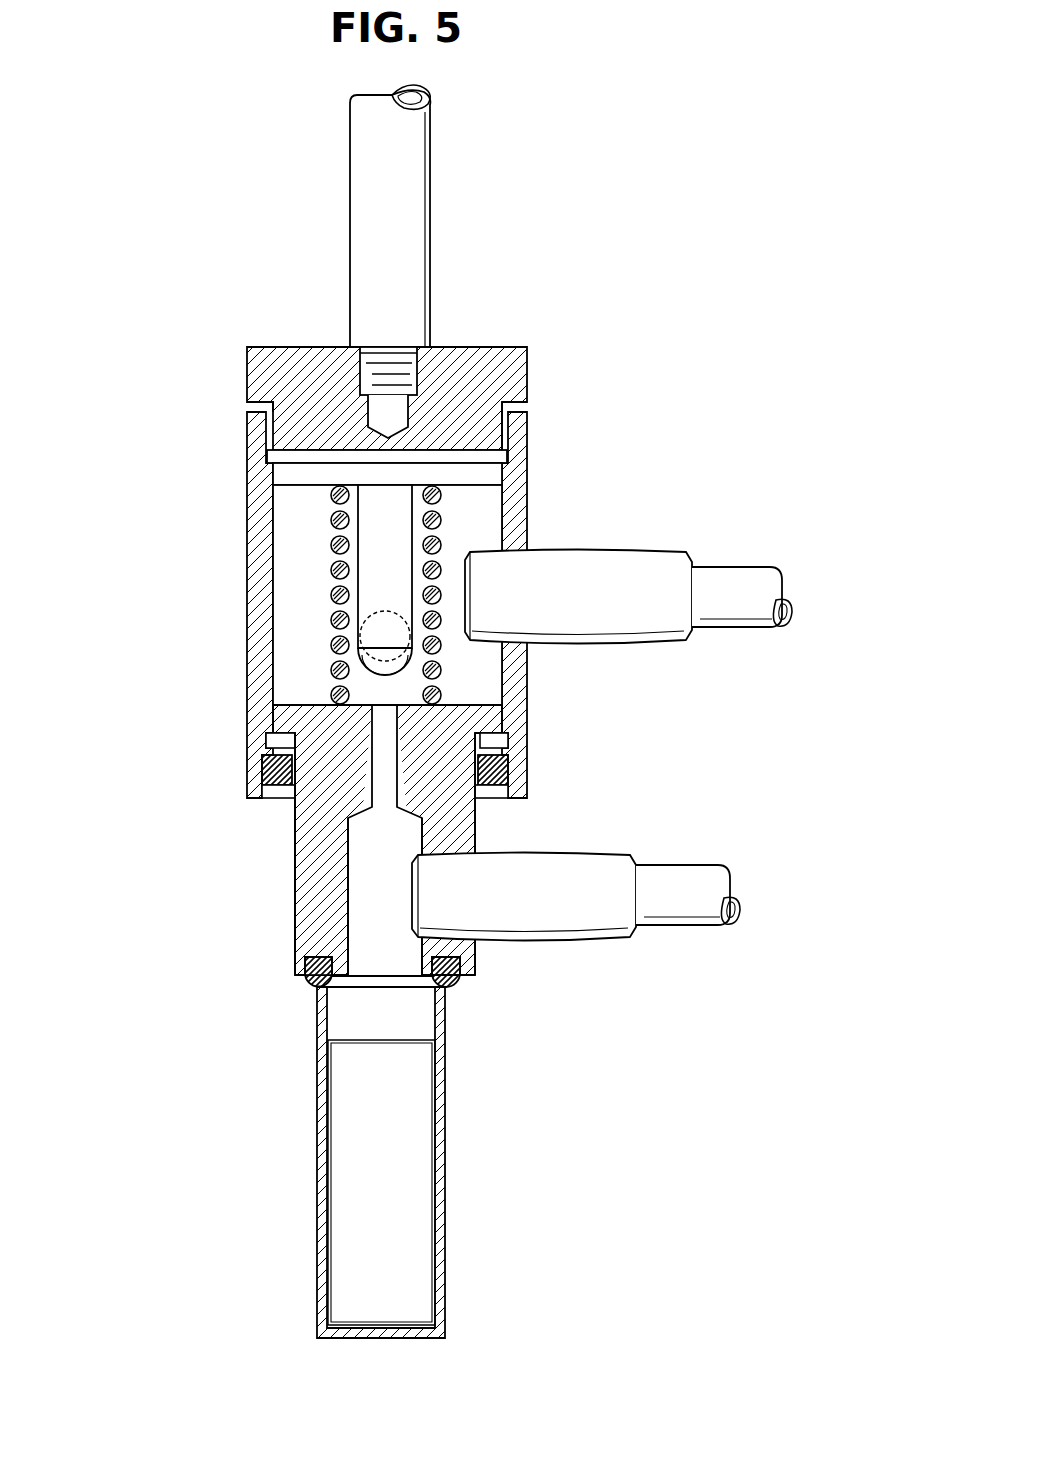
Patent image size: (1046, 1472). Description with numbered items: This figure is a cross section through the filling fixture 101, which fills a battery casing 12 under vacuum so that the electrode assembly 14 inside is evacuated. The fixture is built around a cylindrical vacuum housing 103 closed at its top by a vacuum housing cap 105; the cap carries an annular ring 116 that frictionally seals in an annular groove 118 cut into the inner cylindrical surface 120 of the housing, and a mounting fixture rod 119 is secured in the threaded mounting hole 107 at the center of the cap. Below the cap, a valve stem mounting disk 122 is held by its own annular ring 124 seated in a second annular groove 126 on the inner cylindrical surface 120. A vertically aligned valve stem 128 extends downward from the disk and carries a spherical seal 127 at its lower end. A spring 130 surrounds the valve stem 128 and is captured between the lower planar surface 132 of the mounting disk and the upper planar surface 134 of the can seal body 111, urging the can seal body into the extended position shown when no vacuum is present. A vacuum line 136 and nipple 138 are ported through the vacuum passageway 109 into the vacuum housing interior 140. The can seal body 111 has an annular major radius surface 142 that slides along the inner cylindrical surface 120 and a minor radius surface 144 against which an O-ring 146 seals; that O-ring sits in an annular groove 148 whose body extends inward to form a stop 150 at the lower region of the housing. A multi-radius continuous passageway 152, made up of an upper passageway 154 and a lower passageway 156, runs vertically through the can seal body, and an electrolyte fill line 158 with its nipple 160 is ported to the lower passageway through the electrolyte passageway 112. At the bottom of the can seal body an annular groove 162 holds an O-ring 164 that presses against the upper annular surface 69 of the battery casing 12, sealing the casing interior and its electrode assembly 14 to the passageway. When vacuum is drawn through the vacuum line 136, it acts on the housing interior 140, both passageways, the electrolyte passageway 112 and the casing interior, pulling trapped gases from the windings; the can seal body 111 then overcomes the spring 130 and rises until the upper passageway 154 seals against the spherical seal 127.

The filling fixture 101 is at (618, 316).
The mounting fixture rod 119 is at (418, 212).
The cylindrical vacuum housing 103 is at (386, 548).
The cylindrical vacuum housing cap 105 is at (250, 363).
The annular ring 116 is at (507, 440).
The threaded mounting hole 107 is at (370, 372).
The annular groove 118 is at (266, 412).
The annular ring 124 is at (528, 440).
The annular groove 126 is at (268, 460).
The valve stem mounting disk 122 is at (508, 473).
The inner cylindrical surface 120 is at (282, 514).
The vacuum passageway 109 is at (525, 537).
The nipple 138 is at (612, 566).
The vacuum line 136 is at (720, 582).
The lower planar surface 132 is at (456, 494).
The vacuum housing interior 140 is at (326, 559).
The valve stem 128 is at (375, 590).
The spring 130 is at (330, 670).
The spherical seal 127 is at (373, 672).
The upper planar surface 134 is at (467, 702).
The annular major radius surface 142 is at (512, 700).
The O-ring 146 is at (513, 745).
The annular groove 148 is at (510, 777).
The stop 150 is at (265, 752).
The upper passageway 154 is at (380, 793).
The minor radius surface 144 is at (295, 866).
The can seal body 111 is at (300, 882).
The electrolyte passageway 112 is at (470, 832).
The multi-radius continuous passageway 152 is at (370, 907).
The lower passageway 156 is at (320, 948).
The annular groove 162 is at (465, 957).
The O-ring 164 is at (450, 985).
The electrolyte fill line 158 is at (668, 878).
The nipple 160 is at (585, 920).
The upper annular surface 69 is at (303, 996).
The battery casing 12 is at (443, 1135).
The electrode assembly 14 is at (410, 1195).